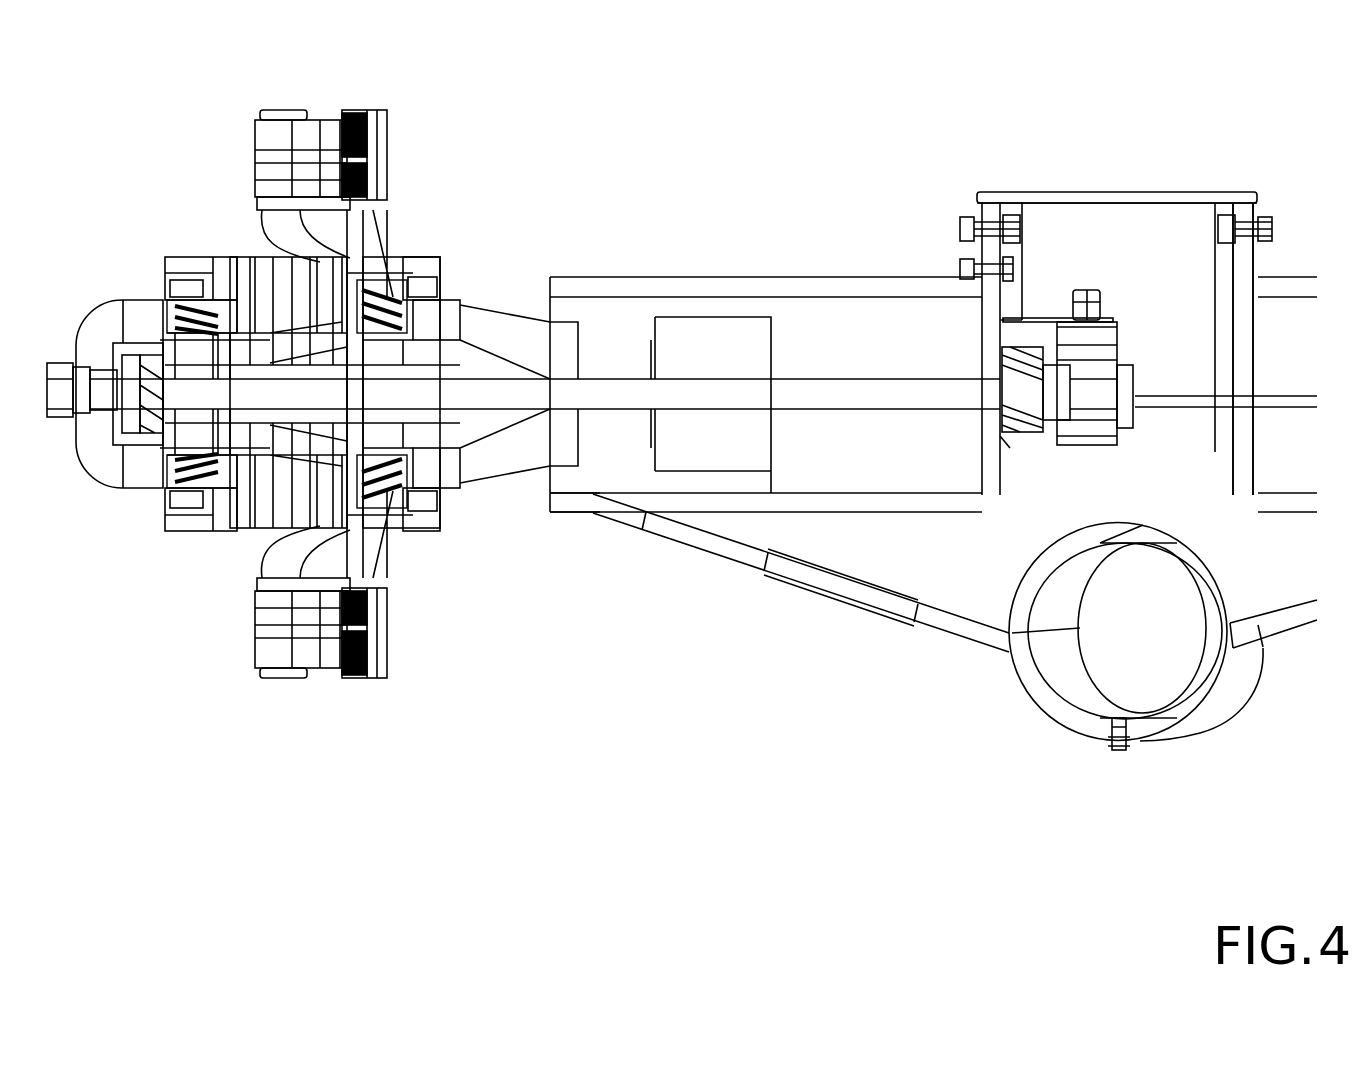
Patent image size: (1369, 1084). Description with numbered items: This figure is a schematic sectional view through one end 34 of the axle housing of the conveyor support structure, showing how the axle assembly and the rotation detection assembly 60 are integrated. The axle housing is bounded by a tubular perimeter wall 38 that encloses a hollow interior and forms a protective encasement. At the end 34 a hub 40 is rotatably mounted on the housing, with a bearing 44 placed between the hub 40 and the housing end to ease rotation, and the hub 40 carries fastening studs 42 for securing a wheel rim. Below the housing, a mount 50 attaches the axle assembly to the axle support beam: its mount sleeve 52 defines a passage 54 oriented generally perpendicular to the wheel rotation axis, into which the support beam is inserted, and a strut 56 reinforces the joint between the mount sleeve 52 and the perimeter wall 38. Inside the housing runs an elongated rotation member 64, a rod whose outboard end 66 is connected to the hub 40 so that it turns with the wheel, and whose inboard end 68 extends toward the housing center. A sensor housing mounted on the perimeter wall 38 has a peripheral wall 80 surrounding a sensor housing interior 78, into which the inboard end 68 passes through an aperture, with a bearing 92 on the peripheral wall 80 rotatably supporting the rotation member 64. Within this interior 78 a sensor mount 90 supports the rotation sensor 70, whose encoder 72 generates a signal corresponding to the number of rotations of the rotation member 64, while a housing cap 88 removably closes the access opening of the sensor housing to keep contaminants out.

The end 34 is at (563, 532).
The perimeter wall 38 is at (715, 290).
The hub 40 is at (250, 262).
The fastening studs 42 is at (318, 133).
The bearing 44 is at (380, 297).
The mount 50 is at (955, 632).
The mount sleeve 52 is at (1083, 720).
The passage 54 is at (1110, 640).
The strut 56 is at (733, 553).
The rotation detection assembly 60 is at (1097, 295).
The rotation member 64 is at (483, 393).
The outboard end 66 is at (197, 390).
The inboard end 68 is at (1058, 397).
The rotation sensor 70 is at (1117, 303).
The encoder 72 is at (1093, 372).
The sensor housing interior 78 is at (1140, 240).
The peripheral wall 80 is at (1238, 283).
The housing cap 88 is at (1180, 192).
The sensor mount 90 is at (1045, 385).
The bearing 92 is at (1000, 436).